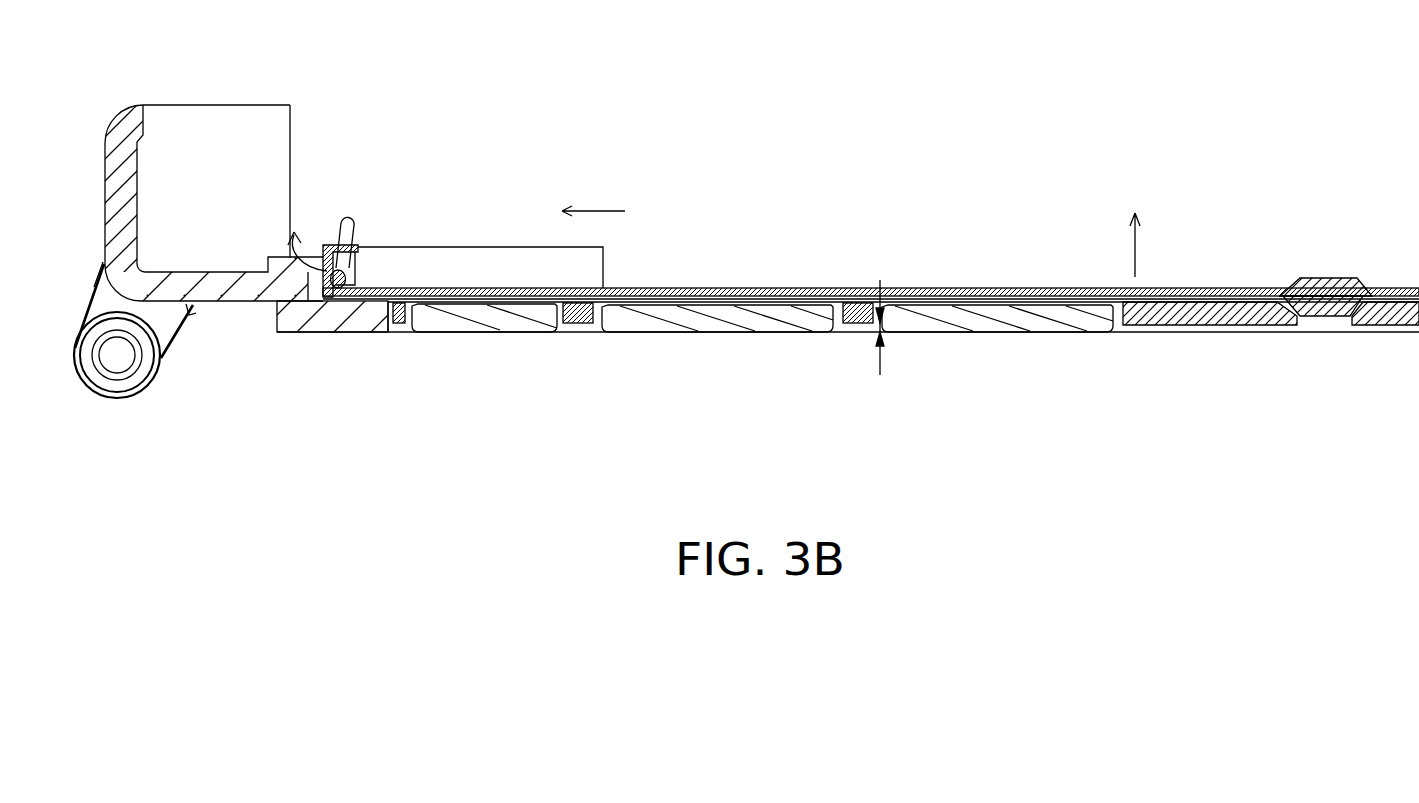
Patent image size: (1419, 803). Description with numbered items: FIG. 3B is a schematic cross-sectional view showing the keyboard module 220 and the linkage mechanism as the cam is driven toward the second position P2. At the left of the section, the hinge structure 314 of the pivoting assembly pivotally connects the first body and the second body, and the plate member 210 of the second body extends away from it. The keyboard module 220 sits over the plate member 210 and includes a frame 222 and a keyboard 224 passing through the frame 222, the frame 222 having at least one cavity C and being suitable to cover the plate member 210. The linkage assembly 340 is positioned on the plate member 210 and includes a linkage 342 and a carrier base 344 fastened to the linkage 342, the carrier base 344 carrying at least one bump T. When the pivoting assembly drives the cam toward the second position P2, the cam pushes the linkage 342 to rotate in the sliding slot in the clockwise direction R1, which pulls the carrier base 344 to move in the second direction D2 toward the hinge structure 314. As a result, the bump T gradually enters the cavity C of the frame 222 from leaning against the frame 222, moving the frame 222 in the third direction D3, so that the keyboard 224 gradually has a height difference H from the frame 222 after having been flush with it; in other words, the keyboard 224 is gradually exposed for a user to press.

The plate member 210 is at (343, 322).
The keyboard module 220 is at (848, 337).
The frame 222 is at (580, 312).
The keyboard 224 is at (504, 320).
The hinge structure 314 is at (120, 372).
The linkage assembly 340 is at (871, 259).
The linkage 342 is at (350, 266).
The carrier base 344 is at (960, 288).
The height difference H is at (878, 333).
The clockwise direction R1 is at (307, 235).
The second direction D2 is at (576, 214).
The third direction D3 is at (1136, 230).
The bump T is at (1373, 284).
The cavity C is at (1348, 303).
The second position P2 is at (1378, 98).